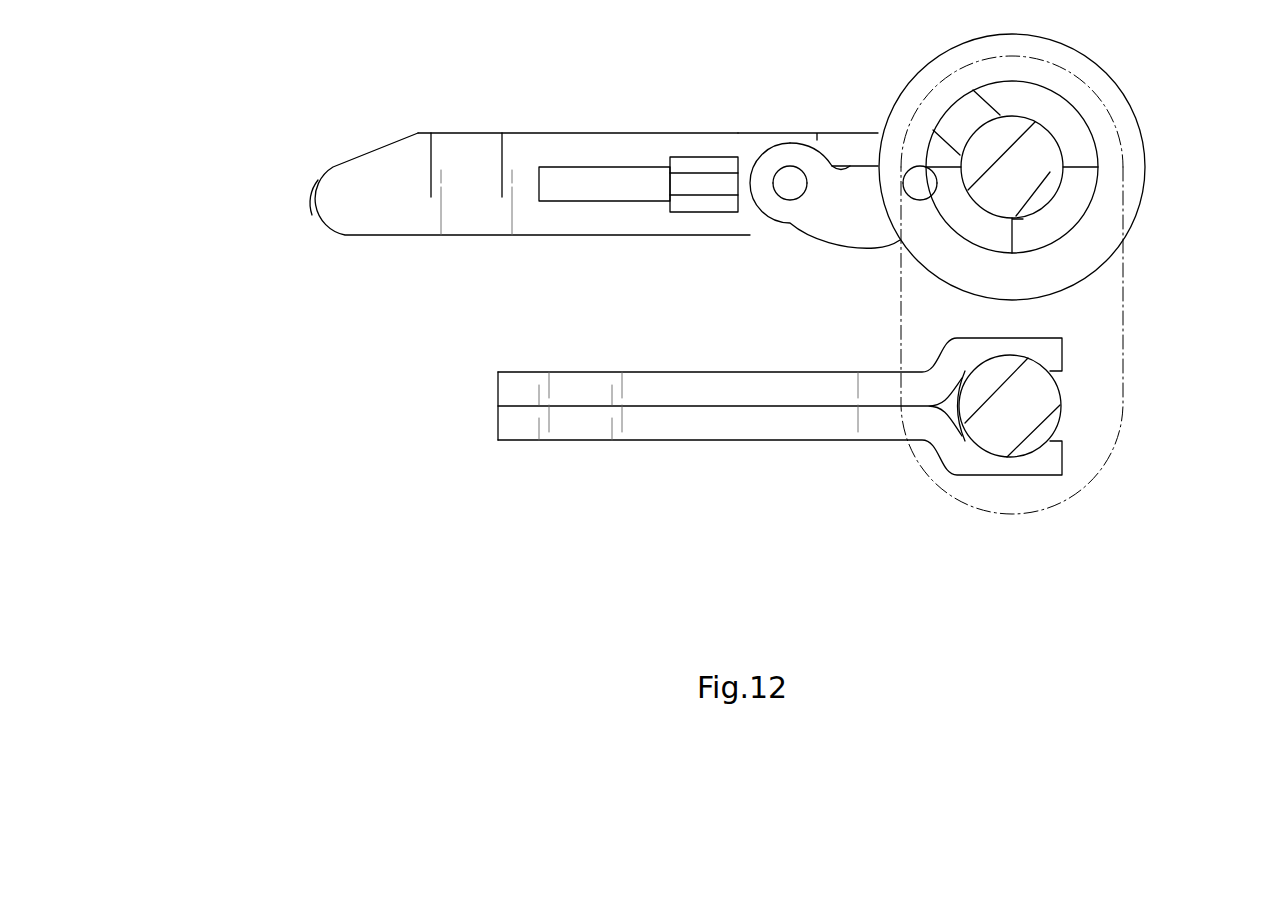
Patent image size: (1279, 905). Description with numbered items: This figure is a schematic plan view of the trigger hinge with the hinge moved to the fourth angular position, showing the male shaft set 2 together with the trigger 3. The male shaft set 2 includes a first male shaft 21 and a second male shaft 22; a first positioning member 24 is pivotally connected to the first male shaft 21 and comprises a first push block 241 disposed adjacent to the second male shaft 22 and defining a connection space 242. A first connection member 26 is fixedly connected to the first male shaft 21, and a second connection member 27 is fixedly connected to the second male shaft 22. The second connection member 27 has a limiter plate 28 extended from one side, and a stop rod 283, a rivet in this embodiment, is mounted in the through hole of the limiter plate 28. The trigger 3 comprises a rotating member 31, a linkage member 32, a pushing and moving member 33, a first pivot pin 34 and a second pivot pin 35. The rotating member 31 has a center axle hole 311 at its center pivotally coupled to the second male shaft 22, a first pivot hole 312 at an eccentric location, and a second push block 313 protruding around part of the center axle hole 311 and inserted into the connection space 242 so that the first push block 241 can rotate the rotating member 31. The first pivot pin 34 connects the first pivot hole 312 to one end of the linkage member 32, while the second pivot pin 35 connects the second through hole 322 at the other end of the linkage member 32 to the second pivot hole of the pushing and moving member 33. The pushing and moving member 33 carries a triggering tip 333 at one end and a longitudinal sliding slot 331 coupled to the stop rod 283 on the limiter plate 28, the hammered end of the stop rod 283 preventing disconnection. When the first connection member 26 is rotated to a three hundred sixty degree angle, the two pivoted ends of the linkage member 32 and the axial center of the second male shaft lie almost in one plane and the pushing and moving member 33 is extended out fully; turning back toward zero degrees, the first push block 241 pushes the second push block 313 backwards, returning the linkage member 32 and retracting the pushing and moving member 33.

The male shaft set 2 is at (1097, 475).
The first male shaft 21 is at (1012, 447).
The second male shaft 22 is at (1048, 172).
The first positioning member 24 is at (1123, 404).
The first push block 241 is at (1055, 113).
The connection space 242 is at (985, 245).
The first connection member 26 is at (707, 433).
The second connection member 27 is at (850, 140).
The limiter plate 28 is at (688, 180).
The stop rod 283 is at (710, 205).
The trigger 3 is at (395, 243).
The rotating member 31 is at (918, 92).
The center axle hole 311 is at (975, 203).
The first pivot hole 312 is at (927, 197).
The second push block 313 is at (1057, 223).
The linkage member 32 is at (852, 243).
The second through hole 322 is at (788, 200).
The pushing and moving member 33 is at (392, 163).
The longitudinal sliding slot 331 is at (539, 202).
The triggering tip 333 is at (308, 200).
The first pivot pin 34 is at (915, 180).
The second pivot pin 35 is at (783, 178).